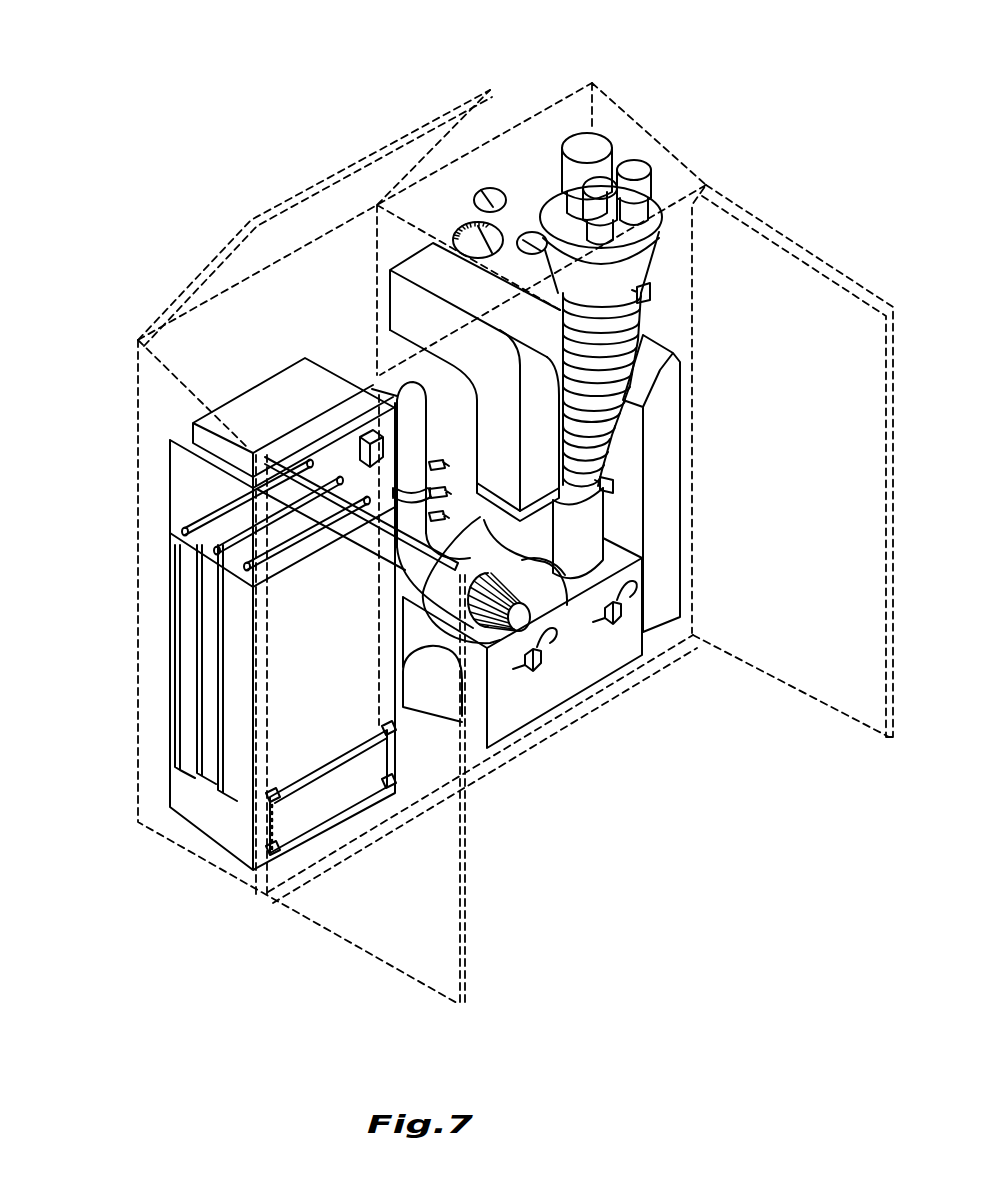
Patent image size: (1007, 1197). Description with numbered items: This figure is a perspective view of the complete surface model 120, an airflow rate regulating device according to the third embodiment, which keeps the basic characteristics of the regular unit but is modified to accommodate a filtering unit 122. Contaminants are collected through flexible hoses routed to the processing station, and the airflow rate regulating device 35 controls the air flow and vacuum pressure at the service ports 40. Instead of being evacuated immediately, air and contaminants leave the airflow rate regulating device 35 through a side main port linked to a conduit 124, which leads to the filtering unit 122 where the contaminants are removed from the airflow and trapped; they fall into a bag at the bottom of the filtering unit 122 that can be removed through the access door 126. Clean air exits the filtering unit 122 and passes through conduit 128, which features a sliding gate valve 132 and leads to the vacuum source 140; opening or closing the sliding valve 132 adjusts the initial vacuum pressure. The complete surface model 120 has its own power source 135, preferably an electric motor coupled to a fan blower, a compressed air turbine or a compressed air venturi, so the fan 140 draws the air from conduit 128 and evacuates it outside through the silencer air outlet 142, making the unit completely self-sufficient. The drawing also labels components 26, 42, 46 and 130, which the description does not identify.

The gauge 26 is at (493, 188).
The airflow rate regulating device 35 is at (590, 667).
The service ports 40 is at (658, 187).
The pressure gauge 42 is at (462, 221).
The gauge 46 is at (524, 231).
The complete surface model 120 is at (385, 926).
The filtering unit 122 is at (127, 440).
The conduit 124 is at (413, 703).
The access door 126 is at (320, 813).
The conduit 128 is at (393, 390).
The fitting 130 is at (425, 460).
The sliding gate valve 132 is at (450, 495).
The power source 135 is at (497, 633).
The vacuum source 140 is at (569, 605).
The silencer air outlet 142 is at (410, 258).